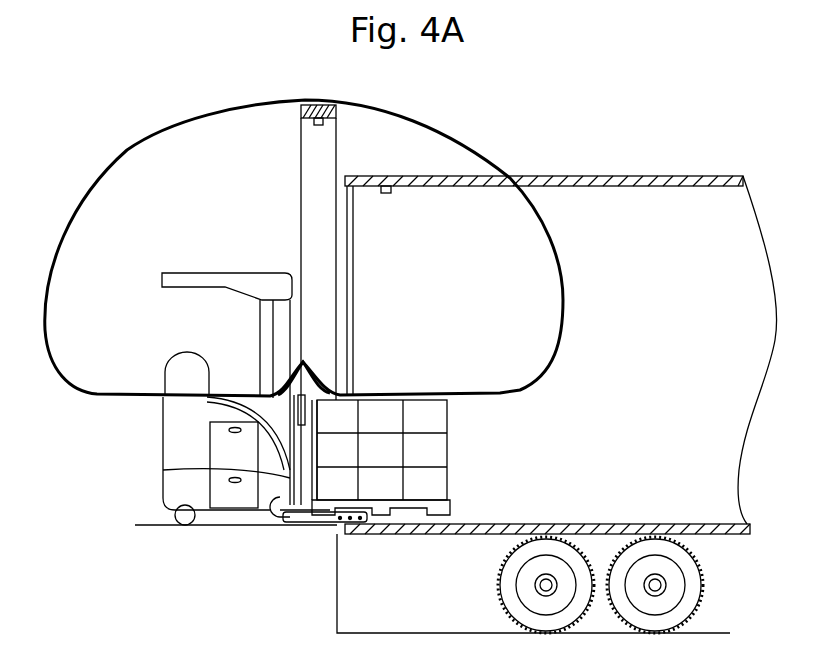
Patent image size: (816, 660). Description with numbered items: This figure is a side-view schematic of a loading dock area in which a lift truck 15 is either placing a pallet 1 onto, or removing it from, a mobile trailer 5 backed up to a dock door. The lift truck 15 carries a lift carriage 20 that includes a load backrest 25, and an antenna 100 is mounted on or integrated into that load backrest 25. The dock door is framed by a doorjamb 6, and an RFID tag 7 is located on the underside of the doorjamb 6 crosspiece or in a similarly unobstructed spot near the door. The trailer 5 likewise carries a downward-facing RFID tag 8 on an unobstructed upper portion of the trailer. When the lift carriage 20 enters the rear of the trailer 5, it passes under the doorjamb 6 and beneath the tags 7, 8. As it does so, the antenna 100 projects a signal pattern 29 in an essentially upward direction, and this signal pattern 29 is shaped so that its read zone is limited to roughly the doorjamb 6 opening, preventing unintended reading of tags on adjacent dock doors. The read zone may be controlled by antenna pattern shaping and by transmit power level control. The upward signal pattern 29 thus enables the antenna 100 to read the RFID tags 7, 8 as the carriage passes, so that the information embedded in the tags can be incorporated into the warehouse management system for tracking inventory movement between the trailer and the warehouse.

The pallet 1 is at (450, 508).
The mobile trailer 5 is at (730, 433).
The doorjamb 6 is at (301, 208).
The RFID tag 7 is at (318, 125).
The RFID tag 8 is at (386, 193).
The lift truck 15 is at (135, 453).
The lift carriage 20 is at (290, 500).
The load backrest 25 is at (287, 472).
The signal pattern 29 is at (470, 146).
The antenna 100 is at (305, 362).